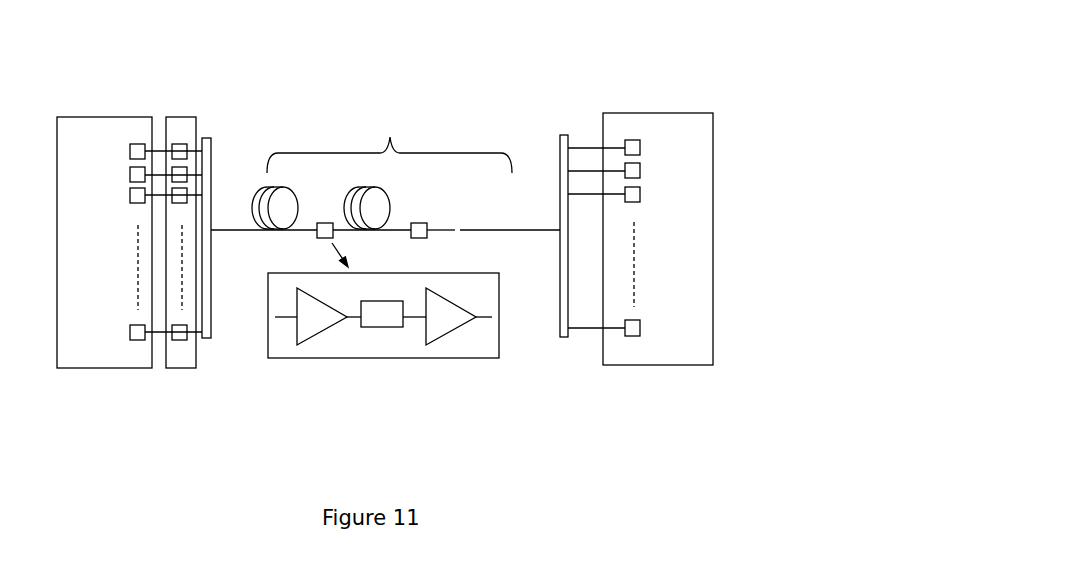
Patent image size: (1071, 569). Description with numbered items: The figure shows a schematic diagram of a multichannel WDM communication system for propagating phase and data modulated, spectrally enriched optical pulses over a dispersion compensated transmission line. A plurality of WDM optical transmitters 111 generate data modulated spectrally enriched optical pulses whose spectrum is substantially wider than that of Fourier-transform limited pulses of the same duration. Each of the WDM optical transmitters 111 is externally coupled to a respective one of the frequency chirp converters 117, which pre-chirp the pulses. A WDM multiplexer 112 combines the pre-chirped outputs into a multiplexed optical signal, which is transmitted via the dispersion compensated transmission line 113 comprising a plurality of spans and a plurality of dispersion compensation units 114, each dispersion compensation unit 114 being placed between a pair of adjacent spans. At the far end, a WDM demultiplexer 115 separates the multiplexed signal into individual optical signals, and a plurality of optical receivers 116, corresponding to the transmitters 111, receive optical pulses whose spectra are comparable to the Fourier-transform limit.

The WDM optical transmitters 111 is at (89, 95).
The WDM multiplexer 112 is at (214, 119).
The dispersion compensated transmission line 113 is at (373, 134).
The dispersion compensation unit 114 is at (383, 340).
The WDM demultiplexer 115 is at (557, 110).
The optical receivers 116 is at (654, 97).
The frequency chirp converters 117 is at (171, 384).